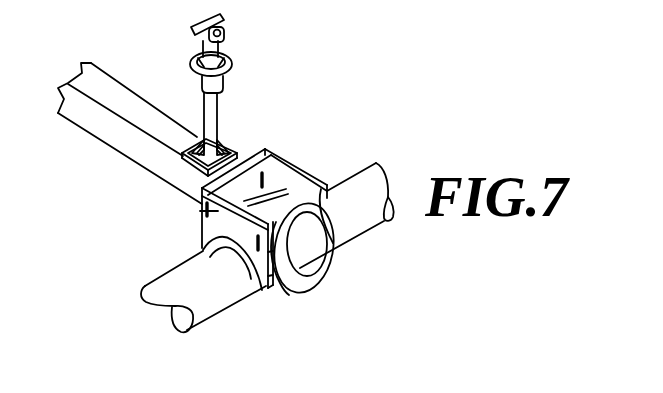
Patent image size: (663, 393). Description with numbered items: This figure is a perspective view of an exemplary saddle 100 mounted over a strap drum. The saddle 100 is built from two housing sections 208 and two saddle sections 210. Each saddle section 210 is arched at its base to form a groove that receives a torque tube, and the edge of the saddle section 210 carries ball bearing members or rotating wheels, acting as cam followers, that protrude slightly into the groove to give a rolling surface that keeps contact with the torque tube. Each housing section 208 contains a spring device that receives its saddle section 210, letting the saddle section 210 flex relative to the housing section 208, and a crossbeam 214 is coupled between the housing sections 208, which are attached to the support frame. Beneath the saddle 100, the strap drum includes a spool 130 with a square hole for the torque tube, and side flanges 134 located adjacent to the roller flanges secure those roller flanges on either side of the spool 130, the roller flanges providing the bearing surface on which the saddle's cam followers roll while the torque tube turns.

The saddle 100 is at (358, 150).
The spool 130 is at (303, 248).
The side flanges 134 is at (328, 275).
The housing sections 208 is at (289, 165).
The saddle sections 210 is at (207, 234).
The crossbeam 214 is at (266, 178).